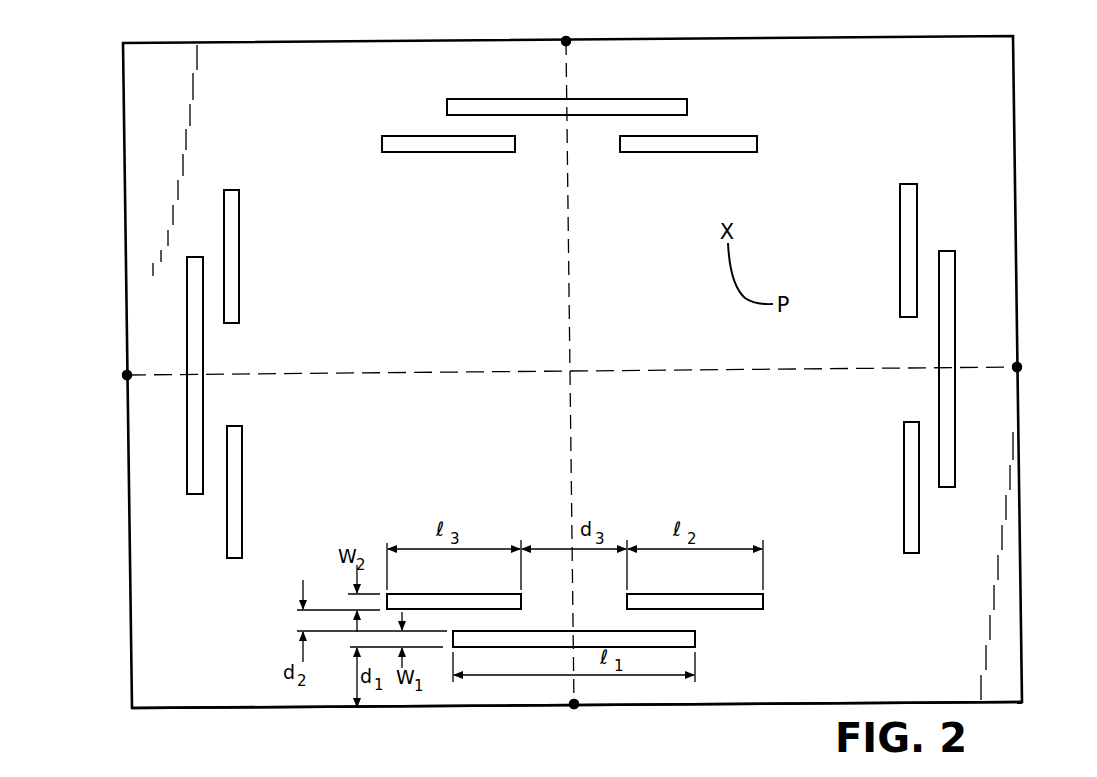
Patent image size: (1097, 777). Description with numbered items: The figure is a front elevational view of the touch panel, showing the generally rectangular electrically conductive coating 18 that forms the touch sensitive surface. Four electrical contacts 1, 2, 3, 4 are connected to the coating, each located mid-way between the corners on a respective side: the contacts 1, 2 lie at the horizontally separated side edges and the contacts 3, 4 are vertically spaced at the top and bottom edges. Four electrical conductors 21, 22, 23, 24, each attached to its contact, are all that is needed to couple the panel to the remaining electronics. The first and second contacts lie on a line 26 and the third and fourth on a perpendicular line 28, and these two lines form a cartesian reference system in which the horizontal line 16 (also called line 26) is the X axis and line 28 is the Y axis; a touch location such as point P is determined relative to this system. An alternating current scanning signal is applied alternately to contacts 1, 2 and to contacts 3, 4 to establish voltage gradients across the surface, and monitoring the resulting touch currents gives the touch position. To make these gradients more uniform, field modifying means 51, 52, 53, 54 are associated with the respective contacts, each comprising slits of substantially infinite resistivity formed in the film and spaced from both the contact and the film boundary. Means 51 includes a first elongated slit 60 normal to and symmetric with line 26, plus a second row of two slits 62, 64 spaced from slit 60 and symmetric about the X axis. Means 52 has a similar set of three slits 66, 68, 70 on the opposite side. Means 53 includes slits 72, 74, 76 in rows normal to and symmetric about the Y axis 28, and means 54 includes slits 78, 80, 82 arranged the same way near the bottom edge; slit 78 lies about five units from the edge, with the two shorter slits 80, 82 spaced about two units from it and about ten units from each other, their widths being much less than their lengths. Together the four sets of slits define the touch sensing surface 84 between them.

The first electrical contact 1 is at (118, 365).
The second electrical contact 2 is at (1028, 354).
The third electrical contact 3 is at (555, 30).
The fourth electrical contact 4 is at (567, 717).
The X axis line 16 is at (116, 622).
The coating 18 is at (219, 693).
The first electrical conductor 21 is at (127, 375).
The second electrical conductor 22 is at (1017, 367).
The third electrical conductor 23 is at (566, 41).
The fourth electrical conductor 24 is at (574, 704).
The X axis line 26 is at (447, 372).
The Y axis line 28 is at (572, 276).
The field modifying means 51 is at (241, 364).
The field modifying means 52 is at (917, 355).
The field modifying means 53 is at (606, 126).
The field modifying means 54 is at (620, 611).
The first elongated slit 60 is at (187, 327).
The slit 62 is at (243, 491).
The slit 64 is at (240, 250).
The slit 66 is at (957, 307).
The slit 68 is at (904, 443).
The slit 70 is at (917, 199).
The slit 72 is at (513, 99).
The slit 74 is at (430, 136).
The slit 76 is at (724, 136).
The slit 78 is at (695, 634).
The slit 80 is at (462, 594).
The slit 82 is at (702, 594).
The touch sensing surface 84 is at (668, 465).